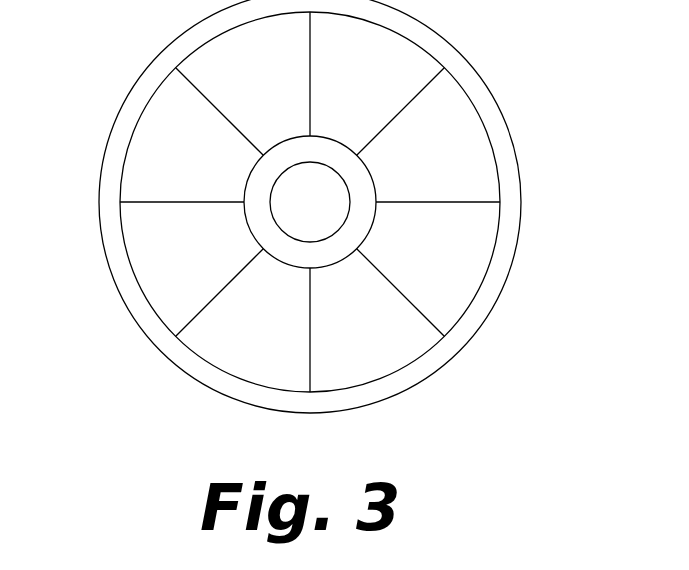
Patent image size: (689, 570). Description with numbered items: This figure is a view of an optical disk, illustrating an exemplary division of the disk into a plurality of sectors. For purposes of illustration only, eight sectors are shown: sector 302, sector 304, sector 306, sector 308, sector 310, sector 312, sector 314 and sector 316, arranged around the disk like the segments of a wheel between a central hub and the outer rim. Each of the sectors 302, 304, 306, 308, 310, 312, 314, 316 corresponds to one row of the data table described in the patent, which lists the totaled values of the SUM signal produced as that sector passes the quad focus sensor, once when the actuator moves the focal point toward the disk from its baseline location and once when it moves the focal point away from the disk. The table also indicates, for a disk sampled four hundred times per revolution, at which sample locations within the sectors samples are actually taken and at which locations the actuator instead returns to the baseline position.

The sector 302 is at (438, 40).
The sector 304 is at (520, 118).
The sector 306 is at (525, 286).
The sector 308 is at (434, 385).
The sector 310 is at (189, 382).
The sector 312 is at (95, 282).
The sector 314 is at (96, 122).
The sector 316 is at (169, 45).